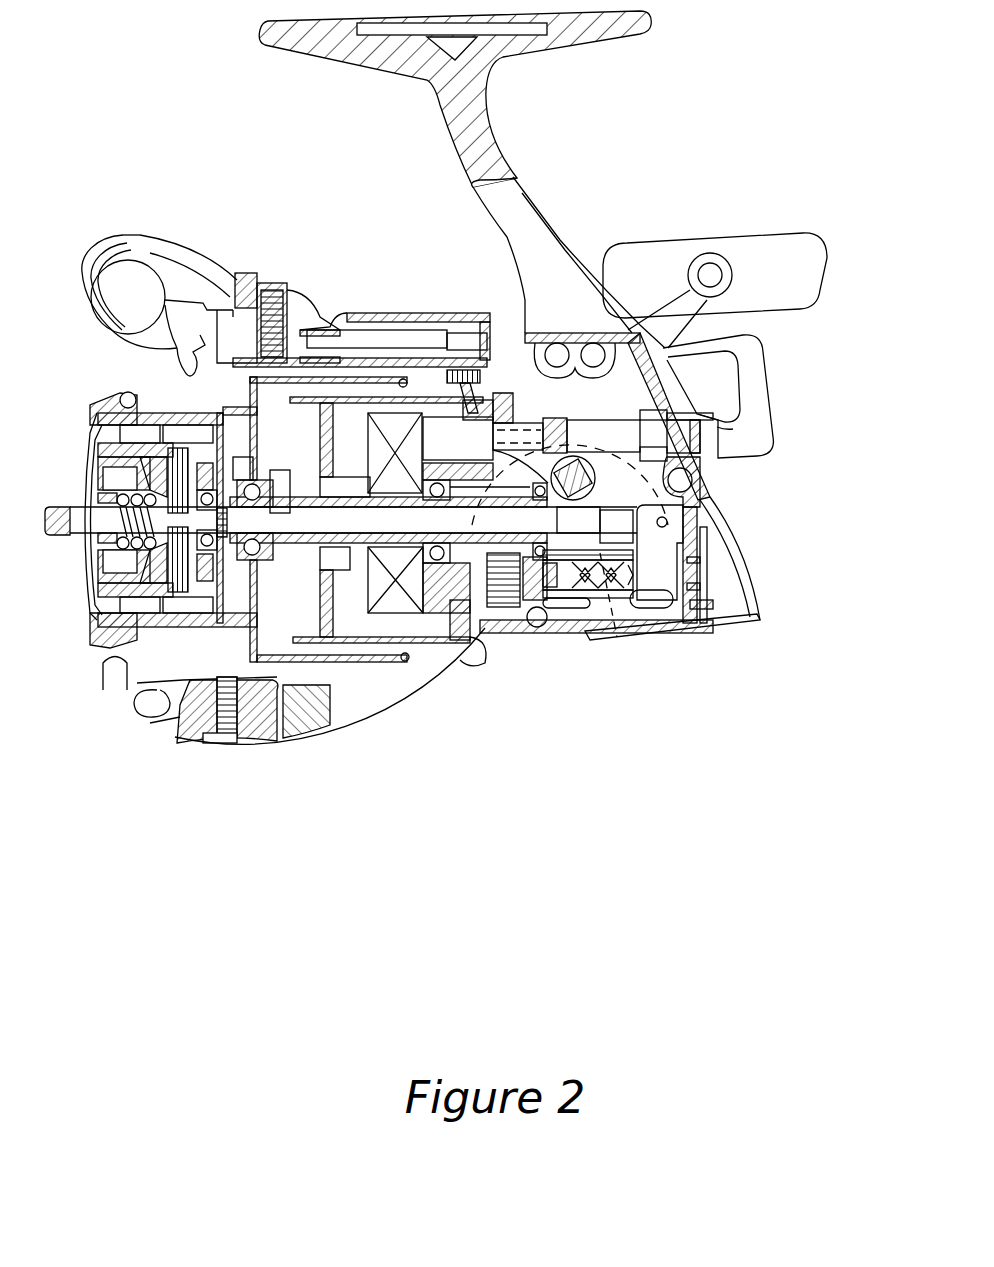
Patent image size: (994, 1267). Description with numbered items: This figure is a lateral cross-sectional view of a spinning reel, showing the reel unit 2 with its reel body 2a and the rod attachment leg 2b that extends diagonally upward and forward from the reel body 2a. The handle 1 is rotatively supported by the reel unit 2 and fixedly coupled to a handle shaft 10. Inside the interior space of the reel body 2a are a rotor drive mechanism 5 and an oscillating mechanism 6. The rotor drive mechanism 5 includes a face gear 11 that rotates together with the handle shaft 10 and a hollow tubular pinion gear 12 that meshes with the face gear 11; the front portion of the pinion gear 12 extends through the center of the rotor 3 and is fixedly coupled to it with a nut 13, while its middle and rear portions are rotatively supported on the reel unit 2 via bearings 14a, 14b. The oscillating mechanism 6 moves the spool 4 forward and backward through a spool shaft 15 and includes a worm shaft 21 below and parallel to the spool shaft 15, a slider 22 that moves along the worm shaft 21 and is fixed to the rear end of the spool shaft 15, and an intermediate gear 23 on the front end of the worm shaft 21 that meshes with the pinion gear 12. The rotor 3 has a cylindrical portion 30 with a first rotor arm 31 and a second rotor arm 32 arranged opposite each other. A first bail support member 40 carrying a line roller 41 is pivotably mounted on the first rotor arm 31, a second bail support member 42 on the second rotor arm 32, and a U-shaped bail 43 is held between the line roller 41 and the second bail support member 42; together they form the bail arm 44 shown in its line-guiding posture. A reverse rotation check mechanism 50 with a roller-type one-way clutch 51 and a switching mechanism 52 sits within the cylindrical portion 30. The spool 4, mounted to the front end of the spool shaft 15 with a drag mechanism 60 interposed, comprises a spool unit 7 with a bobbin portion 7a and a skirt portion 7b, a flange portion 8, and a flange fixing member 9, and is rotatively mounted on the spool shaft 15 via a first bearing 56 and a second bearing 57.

The handle 1 is at (680, 297).
The reel unit 2 is at (747, 523).
The reel body 2a is at (742, 477).
The rod attachment leg 2b is at (537, 197).
The rotor 3 is at (377, 670).
The spool 4 is at (220, 645).
The rotor drive mechanism 5 is at (607, 460).
The oscillating mechanism 6 is at (595, 610).
The spool unit 7 is at (243, 637).
The bobbin portion 7a is at (173, 710).
The skirt portion 7b is at (283, 683).
The flange portion 8 is at (103, 690).
The flange fixing member 9 is at (90, 633).
The handle shaft 10 is at (560, 457).
The face gear 11 is at (617, 640).
The pinion gear 12 is at (510, 607).
The nut 13 is at (337, 477).
The bearing 14a is at (437, 487).
The bearing 14b is at (540, 630).
The spool shaft 15 is at (653, 560).
The worm shaft 21 is at (625, 535).
The slider 22 is at (713, 597).
The intermediate gear 23 is at (508, 607).
The cylindrical portion 30 is at (390, 667).
The first rotor arm 31 is at (318, 325).
The second rotor arm 32 is at (310, 723).
The first bail support member 40 is at (207, 273).
The line roller 41 is at (80, 257).
The second bail support member 42 is at (173, 717).
The bail 43 is at (203, 353).
The bail arm 44 is at (135, 352).
The reverse rotation check mechanism 50 is at (410, 405).
The one-way clutch 51 is at (440, 400).
The switching mechanism 52 is at (580, 413).
The first bearing 56 is at (203, 450).
The second bearing 57 is at (277, 470).
The drag mechanism 60 is at (170, 660).